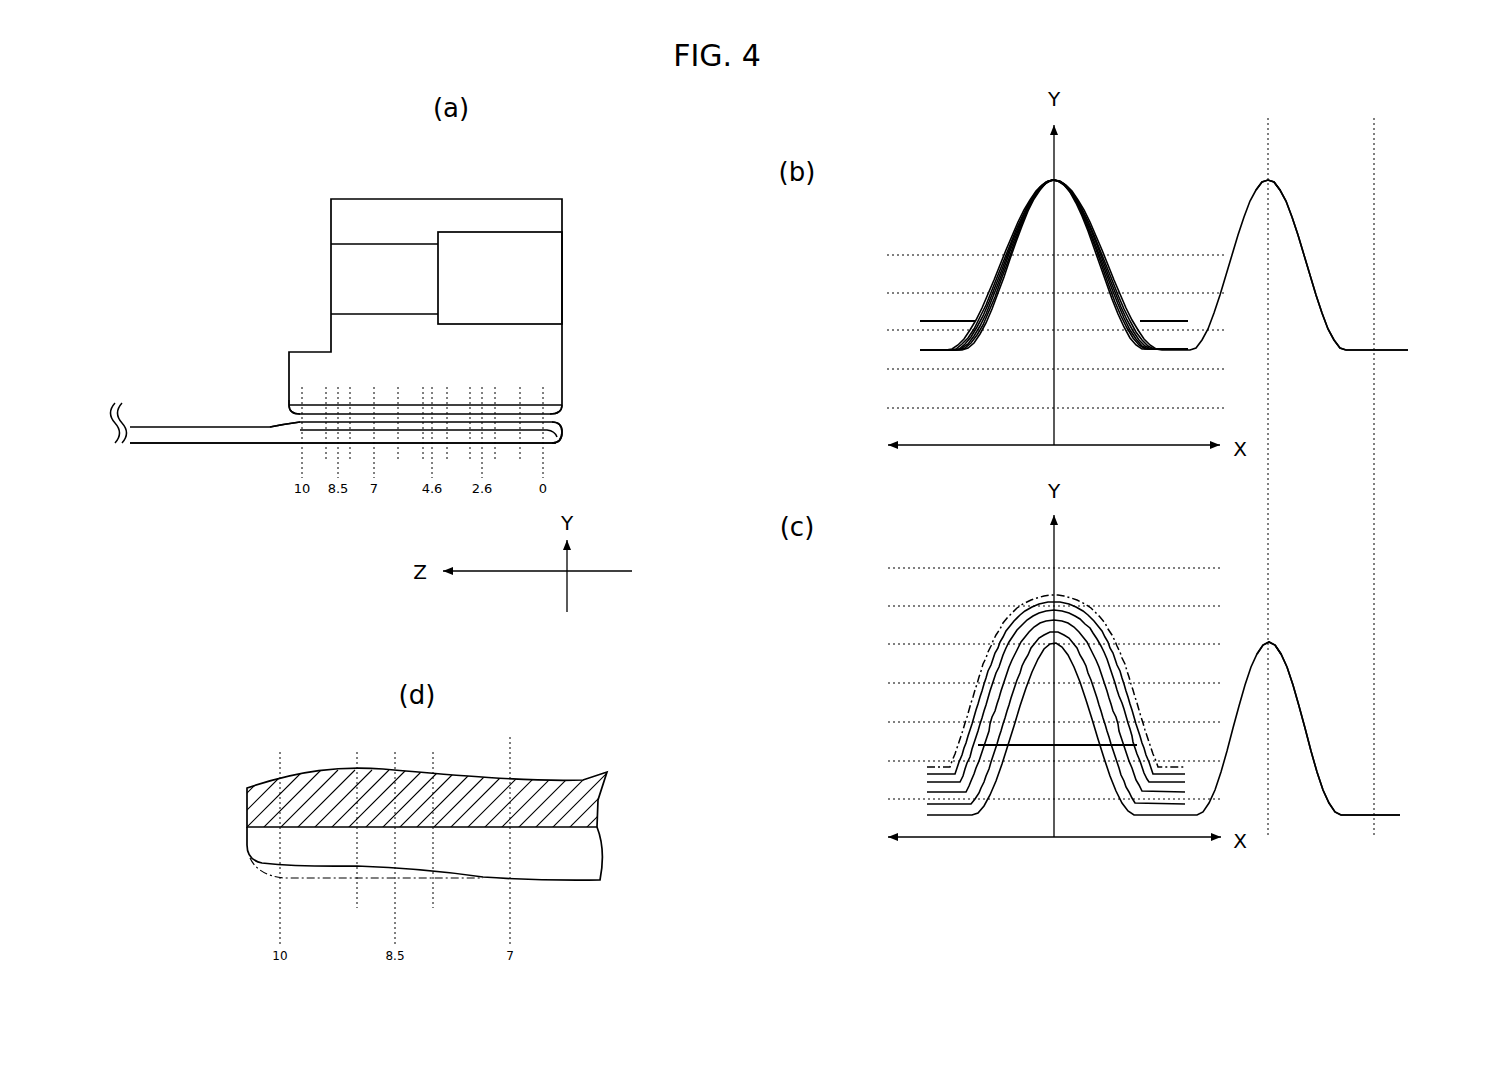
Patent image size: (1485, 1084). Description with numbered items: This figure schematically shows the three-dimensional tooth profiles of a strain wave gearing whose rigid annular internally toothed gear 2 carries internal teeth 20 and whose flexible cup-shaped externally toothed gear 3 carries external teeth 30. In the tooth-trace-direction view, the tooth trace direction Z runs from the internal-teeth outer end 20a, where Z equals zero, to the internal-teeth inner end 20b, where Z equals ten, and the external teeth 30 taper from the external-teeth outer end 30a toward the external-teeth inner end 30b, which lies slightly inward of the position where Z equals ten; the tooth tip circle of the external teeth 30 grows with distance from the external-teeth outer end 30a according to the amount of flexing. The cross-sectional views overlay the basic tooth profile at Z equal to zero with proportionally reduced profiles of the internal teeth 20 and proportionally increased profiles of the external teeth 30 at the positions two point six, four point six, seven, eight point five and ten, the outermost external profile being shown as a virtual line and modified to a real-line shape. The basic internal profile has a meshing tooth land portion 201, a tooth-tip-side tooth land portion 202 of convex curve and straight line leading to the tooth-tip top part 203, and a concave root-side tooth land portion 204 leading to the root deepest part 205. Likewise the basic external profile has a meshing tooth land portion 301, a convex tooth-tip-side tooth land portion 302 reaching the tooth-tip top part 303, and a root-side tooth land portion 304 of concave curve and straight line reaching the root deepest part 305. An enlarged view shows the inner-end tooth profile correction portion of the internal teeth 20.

The internally toothed gear 2 is at (292, 318).
The externally toothed gear 3 is at (210, 418).
The internal teeth 20 is at (364, 432).
The internal-teeth outer end 20a is at (552, 443).
The internal-teeth inner end 20b is at (302, 422).
The external teeth 30 is at (392, 400).
The external-teeth outer end 30a is at (548, 410).
The external-teeth inner end 30b is at (302, 407).
The meshing tooth land portion 201 is at (1316, 290).
The tooth-tip-side tooth land portion 202 is at (1340, 345).
The tooth-tip top part 203 is at (1376, 353).
The root-side tooth land portion 204 is at (1278, 195).
The root deepest part 205 is at (1265, 187).
The meshing tooth land portion 301 is at (1313, 718).
The tooth-tip-side tooth land portion 302 is at (1280, 640).
The tooth-tip top part 303 is at (1268, 637).
The root-side tooth land portion 304 is at (1343, 797).
The root deepest part 305 is at (1376, 810).